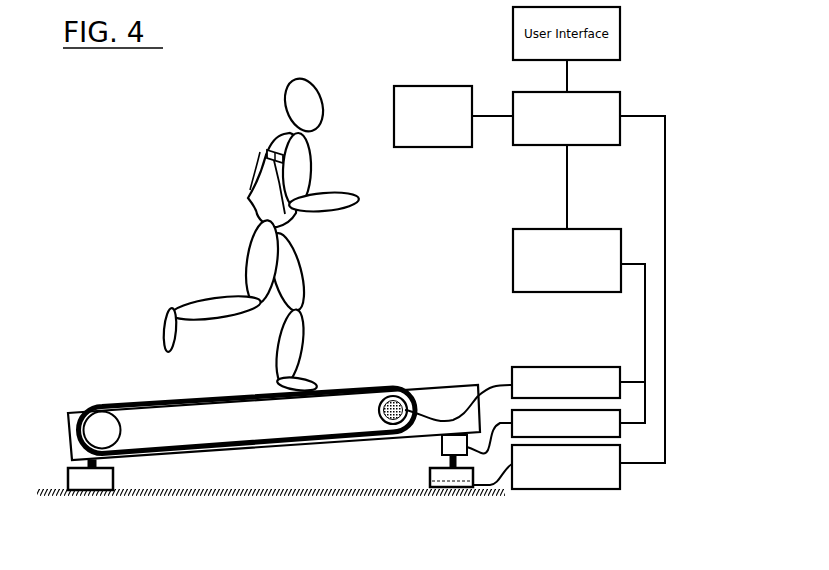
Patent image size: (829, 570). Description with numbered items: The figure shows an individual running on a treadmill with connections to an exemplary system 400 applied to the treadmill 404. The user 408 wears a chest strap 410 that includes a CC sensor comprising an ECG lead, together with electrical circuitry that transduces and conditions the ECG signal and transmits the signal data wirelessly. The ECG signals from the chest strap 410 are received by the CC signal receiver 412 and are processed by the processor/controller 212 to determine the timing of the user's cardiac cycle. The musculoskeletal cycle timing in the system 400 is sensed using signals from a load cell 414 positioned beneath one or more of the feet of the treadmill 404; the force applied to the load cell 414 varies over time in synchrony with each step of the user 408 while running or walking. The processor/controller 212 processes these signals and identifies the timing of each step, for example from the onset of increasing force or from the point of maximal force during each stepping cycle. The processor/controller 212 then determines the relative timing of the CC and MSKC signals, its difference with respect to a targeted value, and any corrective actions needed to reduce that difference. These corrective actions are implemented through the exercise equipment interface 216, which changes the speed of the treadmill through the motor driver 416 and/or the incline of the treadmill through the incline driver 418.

The system 400 is at (714, 166).
The treadmill 404 is at (67, 428).
The user 408 is at (242, 182).
The chest strap 410 is at (264, 152).
The CC signal receiver 412 is at (430, 86).
The processor/controller 212 is at (602, 92).
The exercise equipment interface 216 is at (512, 275).
The motor driver 416 is at (575, 367).
The incline driver 418 is at (620, 432).
The load cell 414 is at (595, 489).